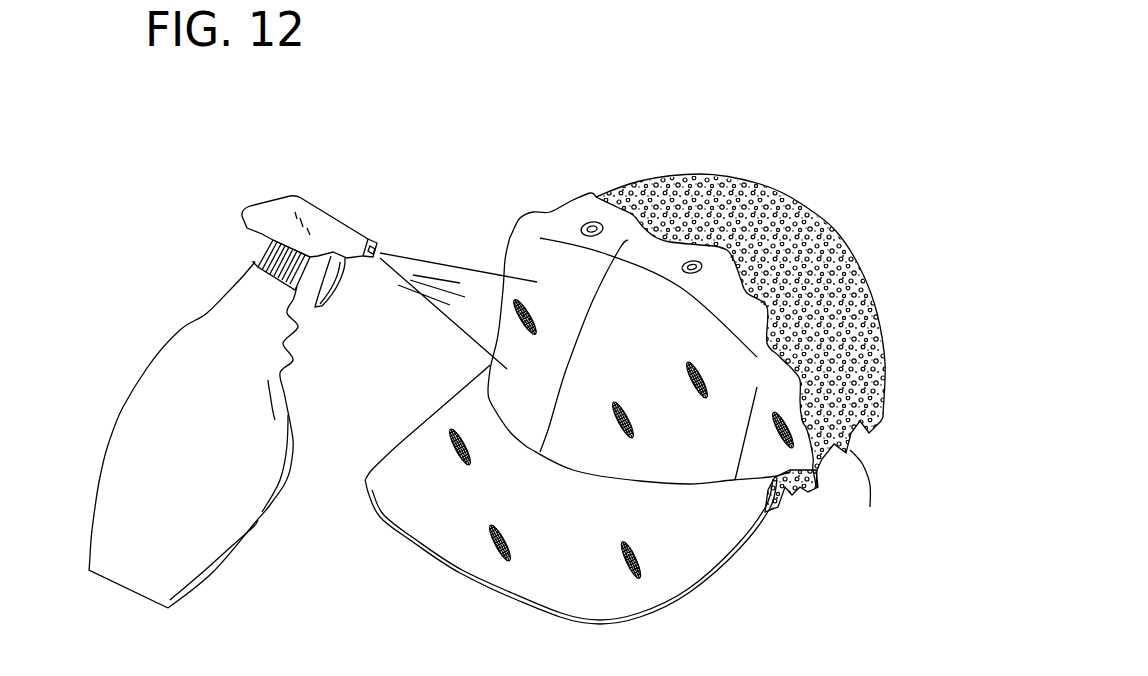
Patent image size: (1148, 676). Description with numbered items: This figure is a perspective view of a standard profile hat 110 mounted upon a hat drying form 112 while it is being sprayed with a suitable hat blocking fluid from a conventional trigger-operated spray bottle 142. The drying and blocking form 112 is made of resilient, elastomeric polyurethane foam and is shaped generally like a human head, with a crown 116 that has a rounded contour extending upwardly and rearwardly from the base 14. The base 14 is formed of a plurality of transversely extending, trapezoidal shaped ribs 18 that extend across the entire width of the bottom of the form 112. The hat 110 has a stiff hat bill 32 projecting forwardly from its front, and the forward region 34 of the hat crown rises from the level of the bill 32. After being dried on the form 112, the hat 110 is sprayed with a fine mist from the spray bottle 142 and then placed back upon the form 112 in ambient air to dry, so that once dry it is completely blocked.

The base 14 is at (650, 356).
The ribs 18 is at (876, 421).
The hat bill 32 is at (675, 567).
The forward region 34 is at (503, 338).
The standard profile hat 110 is at (580, 430).
The hat drying form 112 is at (740, 287).
The crown 116 is at (758, 205).
The spray bottle 142 is at (190, 348).